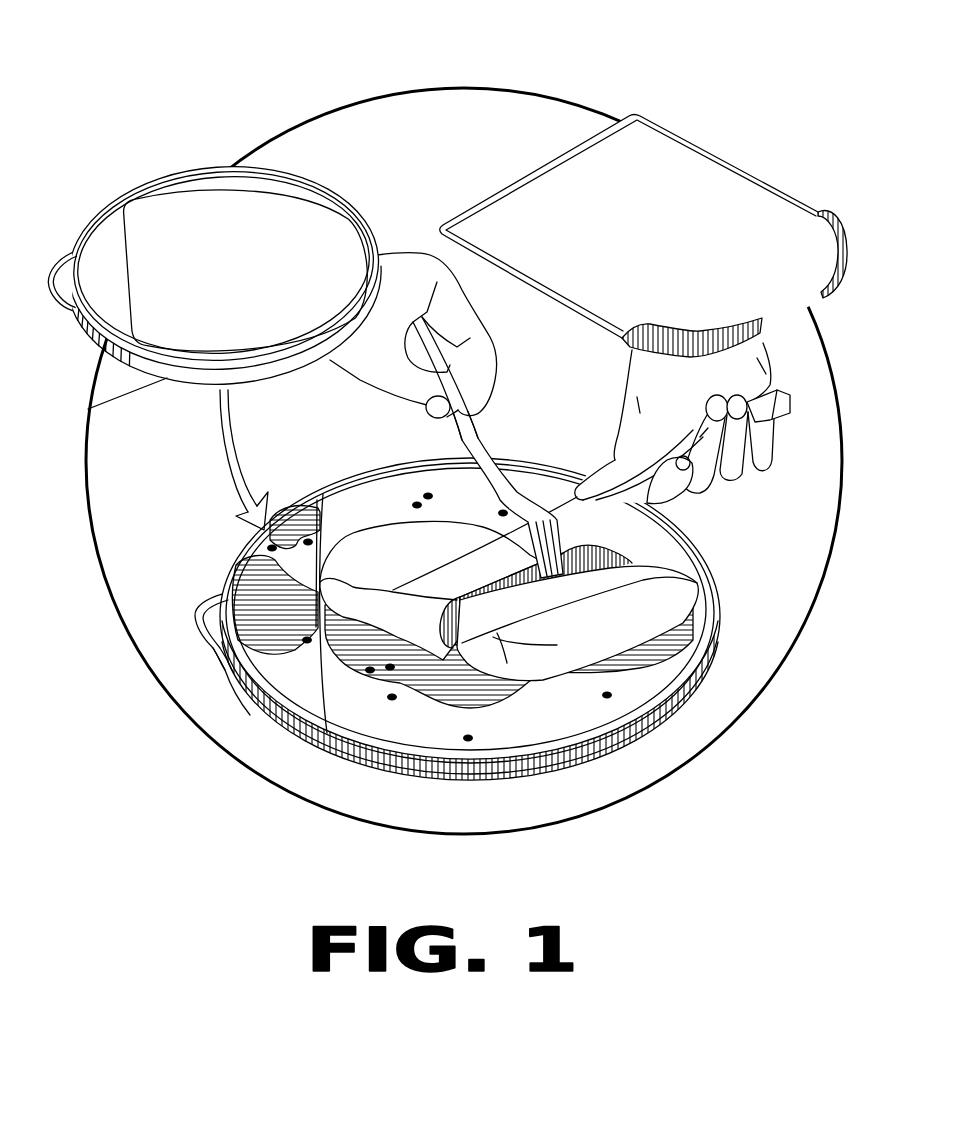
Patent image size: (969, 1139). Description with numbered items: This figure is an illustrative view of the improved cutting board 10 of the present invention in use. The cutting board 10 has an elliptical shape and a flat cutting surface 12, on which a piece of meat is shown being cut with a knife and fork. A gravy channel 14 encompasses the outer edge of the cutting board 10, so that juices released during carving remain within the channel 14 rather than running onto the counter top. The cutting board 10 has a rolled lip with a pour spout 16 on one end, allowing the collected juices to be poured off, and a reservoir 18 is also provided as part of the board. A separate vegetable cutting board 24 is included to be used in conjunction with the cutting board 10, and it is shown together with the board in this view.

The improved cutting board 10 is at (174, 142).
The cutting surface 12 is at (214, 520).
The channel 14 is at (345, 756).
The pour spout 16 is at (203, 641).
The reservoir 18 is at (220, 613).
The vegetable cutting board 24 is at (621, 90).